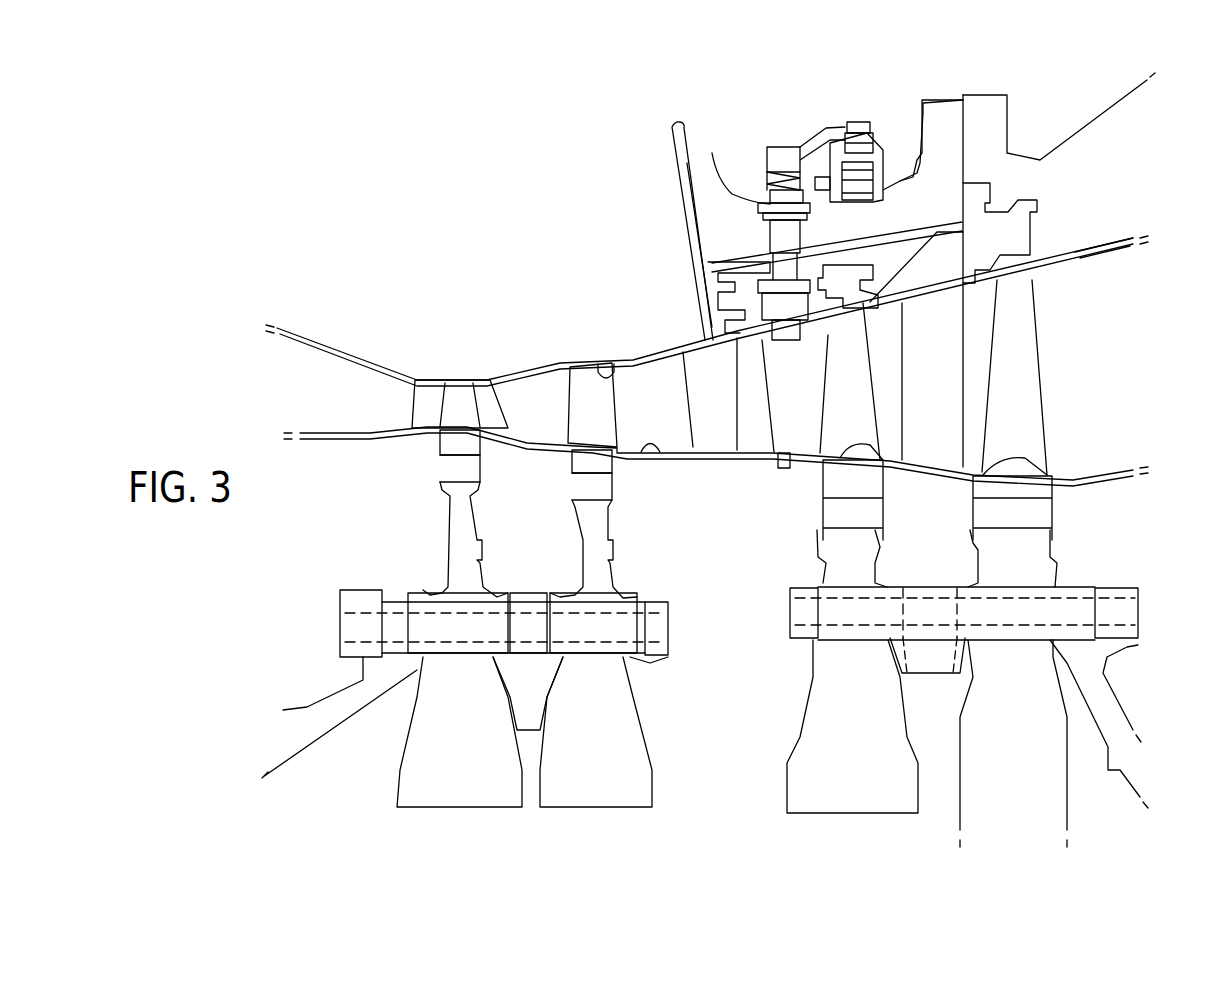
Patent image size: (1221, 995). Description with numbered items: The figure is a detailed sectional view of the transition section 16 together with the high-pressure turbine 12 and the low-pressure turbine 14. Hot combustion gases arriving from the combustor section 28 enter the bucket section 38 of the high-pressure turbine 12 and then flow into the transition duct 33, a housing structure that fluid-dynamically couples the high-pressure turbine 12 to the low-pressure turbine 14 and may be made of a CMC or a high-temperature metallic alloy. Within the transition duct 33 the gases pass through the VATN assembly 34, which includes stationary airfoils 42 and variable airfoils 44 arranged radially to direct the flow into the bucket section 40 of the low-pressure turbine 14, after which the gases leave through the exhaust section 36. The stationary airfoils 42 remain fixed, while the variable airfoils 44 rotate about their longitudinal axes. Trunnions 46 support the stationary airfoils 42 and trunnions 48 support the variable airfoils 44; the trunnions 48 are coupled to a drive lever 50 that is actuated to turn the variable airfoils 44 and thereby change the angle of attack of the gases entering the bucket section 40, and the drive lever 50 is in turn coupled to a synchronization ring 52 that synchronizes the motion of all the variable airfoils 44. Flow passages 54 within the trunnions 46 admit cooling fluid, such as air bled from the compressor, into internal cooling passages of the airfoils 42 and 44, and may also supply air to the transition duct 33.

The high-pressure turbine 12 is at (473, 820).
The low-pressure turbine 14 is at (873, 822).
The transition section 16 is at (670, 427).
The combustor section 28 is at (302, 285).
The transition duct 33 is at (606, 372).
The VATN assembly 34 is at (688, 483).
The exhaust section 36 is at (1133, 252).
The bucket section 38 is at (405, 403).
The bucket section 40 is at (1052, 385).
The stationary airfoils 42 is at (700, 384).
The variable airfoils 44 is at (790, 400).
The trunnions 46 is at (707, 226).
The trunnions 48 is at (793, 227).
The drive lever 50 is at (818, 140).
The synchronization ring 52 is at (880, 153).
The flow passages 54 is at (705, 300).